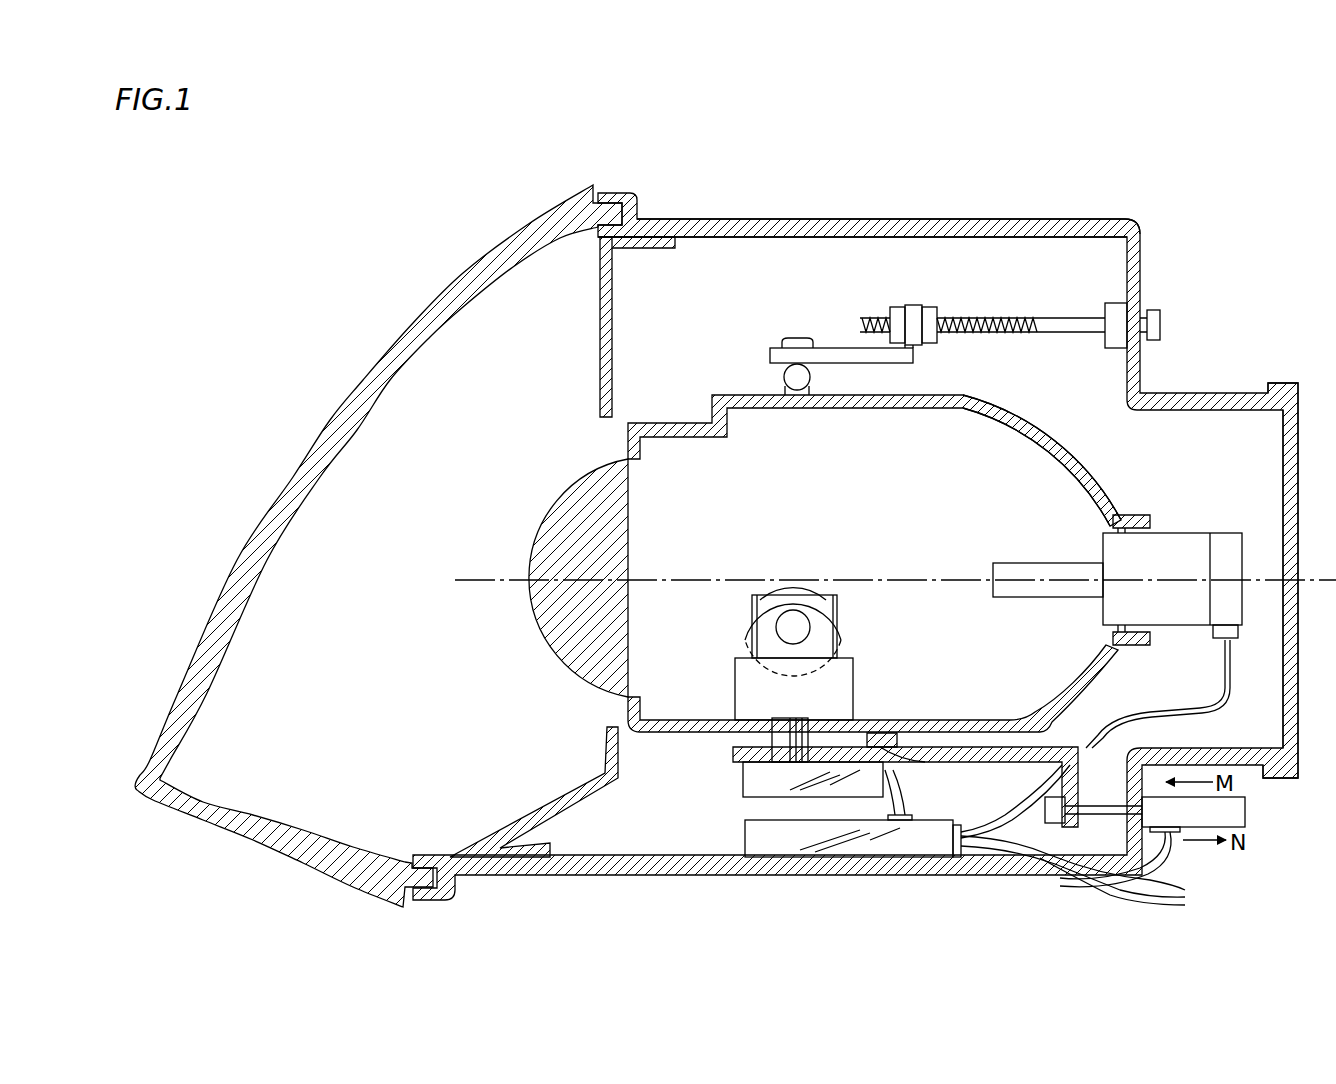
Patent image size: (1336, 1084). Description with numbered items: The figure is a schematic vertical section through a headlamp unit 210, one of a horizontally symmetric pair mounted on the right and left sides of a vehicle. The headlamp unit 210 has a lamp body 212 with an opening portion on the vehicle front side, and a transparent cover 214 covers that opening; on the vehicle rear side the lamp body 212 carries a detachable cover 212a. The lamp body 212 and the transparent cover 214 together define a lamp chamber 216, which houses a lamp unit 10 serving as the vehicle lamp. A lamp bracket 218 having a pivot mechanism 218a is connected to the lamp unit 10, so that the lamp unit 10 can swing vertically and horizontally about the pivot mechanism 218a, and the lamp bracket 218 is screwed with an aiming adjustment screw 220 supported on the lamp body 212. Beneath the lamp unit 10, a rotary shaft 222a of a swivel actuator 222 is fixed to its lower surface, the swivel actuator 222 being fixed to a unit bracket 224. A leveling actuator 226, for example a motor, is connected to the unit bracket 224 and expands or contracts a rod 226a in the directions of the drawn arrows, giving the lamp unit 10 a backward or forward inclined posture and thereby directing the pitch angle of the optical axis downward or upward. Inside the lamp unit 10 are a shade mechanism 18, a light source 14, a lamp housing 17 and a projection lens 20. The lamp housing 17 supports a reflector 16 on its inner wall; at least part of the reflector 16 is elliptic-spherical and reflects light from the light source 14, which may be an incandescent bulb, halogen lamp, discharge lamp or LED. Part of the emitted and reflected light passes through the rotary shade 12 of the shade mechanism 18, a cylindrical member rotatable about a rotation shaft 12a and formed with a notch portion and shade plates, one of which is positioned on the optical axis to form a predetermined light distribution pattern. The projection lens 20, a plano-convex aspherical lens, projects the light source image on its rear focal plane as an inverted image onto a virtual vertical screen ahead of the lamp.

The headlamp unit 210 is at (1016, 213).
The lamp body 212 is at (820, 218).
The detachable cover 212a is at (1283, 388).
The transparent cover 214 is at (432, 328).
The lamp chamber 216 is at (548, 370).
The lamp unit 10 is at (676, 418).
The rotary shade 12 is at (815, 590).
The rotation shaft 12a is at (802, 627).
The light source 14 is at (1040, 560).
The reflector 16 is at (950, 408).
The lamp housing 17 is at (1045, 440).
The shade mechanism 18 is at (788, 562).
The projection lens 20 is at (562, 500).
The lamp bracket 218 is at (850, 355).
The pivot mechanism 218a is at (788, 372).
The aiming adjustment screw 220 is at (1060, 325).
The swivel actuator 222 is at (755, 780).
The rotary shaft 222a is at (768, 747).
The unit bracket 224 is at (948, 757).
The leveling actuator 226 is at (1248, 810).
The rod 226a is at (1110, 805).